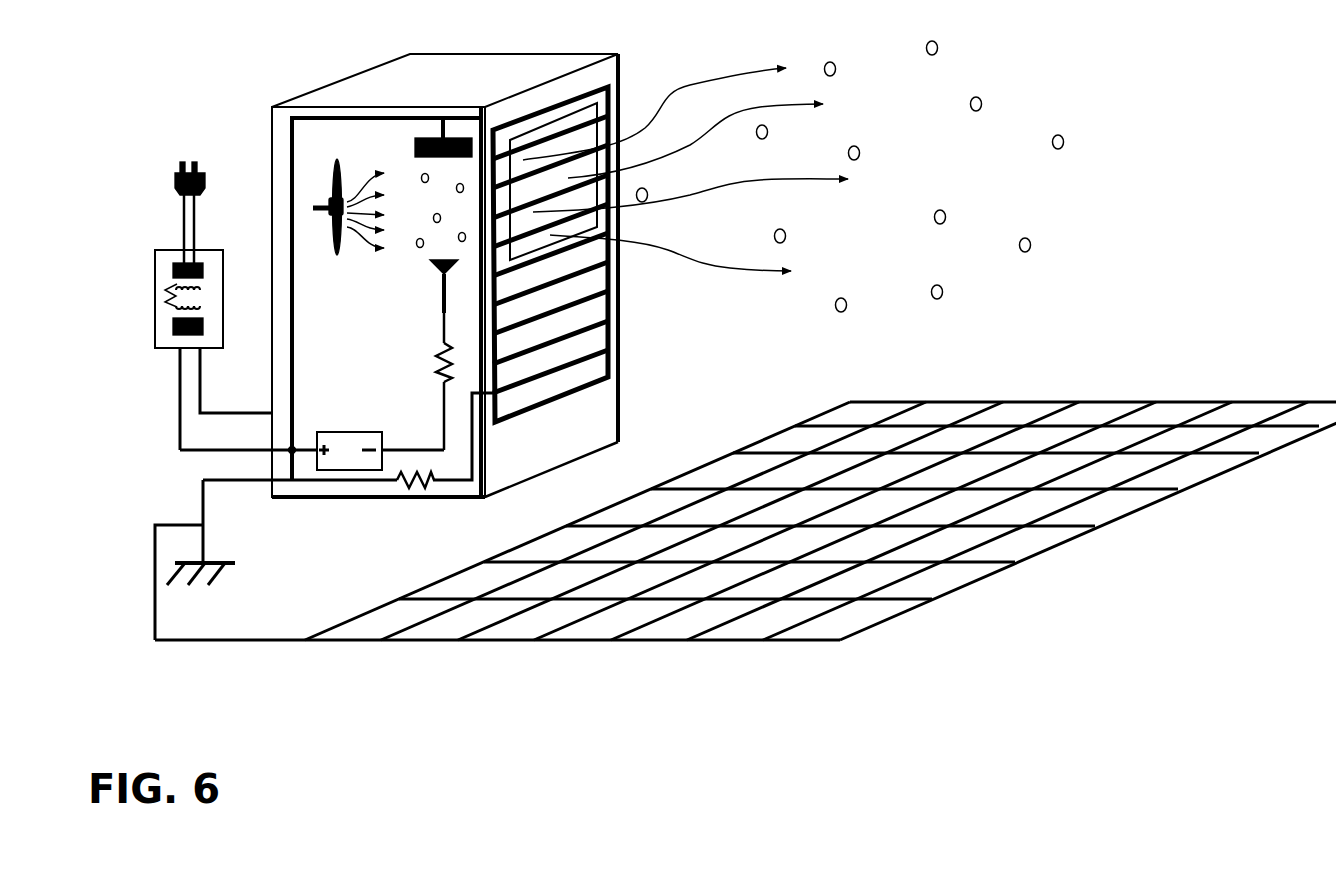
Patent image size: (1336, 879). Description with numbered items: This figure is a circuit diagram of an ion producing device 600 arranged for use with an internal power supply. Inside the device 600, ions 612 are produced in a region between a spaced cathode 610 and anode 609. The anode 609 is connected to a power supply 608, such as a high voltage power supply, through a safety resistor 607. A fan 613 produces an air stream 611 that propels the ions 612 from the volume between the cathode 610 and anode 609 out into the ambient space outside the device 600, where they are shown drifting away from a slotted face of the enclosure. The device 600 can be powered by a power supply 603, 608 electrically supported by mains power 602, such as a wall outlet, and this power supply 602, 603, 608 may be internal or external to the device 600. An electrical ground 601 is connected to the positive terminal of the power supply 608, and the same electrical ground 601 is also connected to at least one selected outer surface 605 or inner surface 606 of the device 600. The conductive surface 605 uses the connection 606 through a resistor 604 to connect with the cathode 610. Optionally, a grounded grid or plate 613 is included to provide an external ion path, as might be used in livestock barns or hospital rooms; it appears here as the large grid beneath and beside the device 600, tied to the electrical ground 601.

The ion producing device 600 is at (262, 169).
The electrical ground 601 is at (208, 561).
The mains power 602 is at (178, 226).
The power supply 603 is at (163, 290).
The resistor 604 is at (432, 489).
The outer surface 605 is at (592, 284).
The inner surface 606 is at (475, 421).
The safety resistor 607 is at (432, 359).
The power supply 608 is at (347, 431).
The anode 609 is at (432, 276).
The cathode 610 is at (459, 133).
The air stream 611 is at (368, 262).
The ions 612 is at (412, 174).
The fan 613 is at (338, 163).